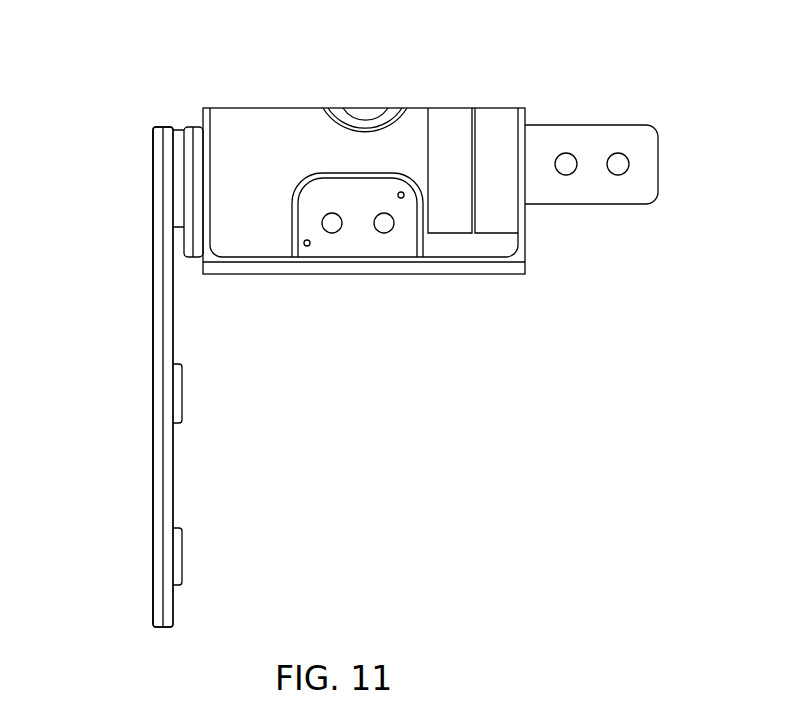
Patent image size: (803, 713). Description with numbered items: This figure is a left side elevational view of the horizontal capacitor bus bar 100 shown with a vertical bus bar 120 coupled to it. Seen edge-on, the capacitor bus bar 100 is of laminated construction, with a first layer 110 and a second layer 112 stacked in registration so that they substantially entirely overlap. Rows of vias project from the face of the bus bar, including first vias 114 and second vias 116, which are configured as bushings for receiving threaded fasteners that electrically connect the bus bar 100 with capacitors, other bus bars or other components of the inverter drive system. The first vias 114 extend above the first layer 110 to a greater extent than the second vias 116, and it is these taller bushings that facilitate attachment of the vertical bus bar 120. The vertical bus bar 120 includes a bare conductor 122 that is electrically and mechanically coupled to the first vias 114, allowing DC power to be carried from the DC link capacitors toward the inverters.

The capacitor bus bar 100 is at (124, 294).
The first layer 110 is at (173, 483).
The second layer 112 is at (152, 387).
The first vias 114 is at (178, 128).
The second vias 116 is at (182, 390).
The vertical bus bar 120 is at (439, 86).
The bare conductor 122 is at (192, 126).